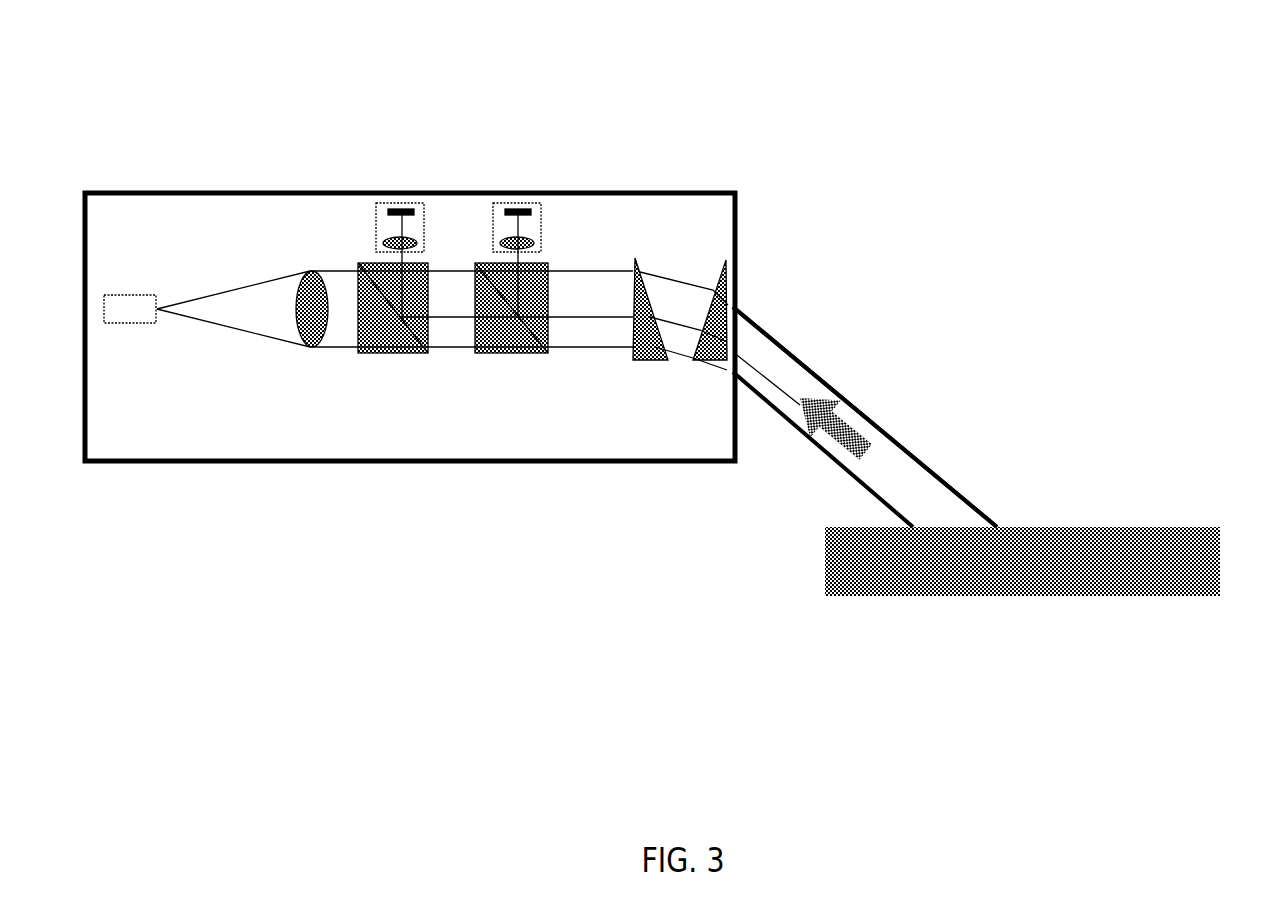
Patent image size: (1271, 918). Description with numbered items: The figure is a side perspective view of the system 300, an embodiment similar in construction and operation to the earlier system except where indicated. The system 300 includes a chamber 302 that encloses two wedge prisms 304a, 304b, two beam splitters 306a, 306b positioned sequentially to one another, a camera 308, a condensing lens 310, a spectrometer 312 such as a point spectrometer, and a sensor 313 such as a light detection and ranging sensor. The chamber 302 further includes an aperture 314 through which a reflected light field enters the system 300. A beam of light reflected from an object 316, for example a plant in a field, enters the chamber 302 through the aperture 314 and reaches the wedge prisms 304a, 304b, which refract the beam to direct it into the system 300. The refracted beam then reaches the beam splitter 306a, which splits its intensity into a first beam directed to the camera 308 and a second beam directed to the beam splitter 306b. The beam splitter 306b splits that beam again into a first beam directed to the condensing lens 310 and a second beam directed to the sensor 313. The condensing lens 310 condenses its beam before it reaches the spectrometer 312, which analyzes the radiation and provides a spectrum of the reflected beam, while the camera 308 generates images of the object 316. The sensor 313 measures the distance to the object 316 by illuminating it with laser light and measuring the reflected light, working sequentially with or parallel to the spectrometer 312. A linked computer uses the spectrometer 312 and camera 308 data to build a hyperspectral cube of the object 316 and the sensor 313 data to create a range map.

The system 300 is at (1073, 127).
The chamber 302 is at (735, 208).
The prism 304a is at (646, 335).
The prism 304b is at (718, 322).
The beam splitter 306a is at (502, 350).
The beam splitter 306b is at (396, 350).
The camera 308 is at (517, 205).
The condensing lens 310 is at (312, 308).
The spectrometer 312 is at (135, 318).
The sensor 313 is at (398, 205).
The aperture 314 is at (740, 303).
The object 316 is at (995, 530).